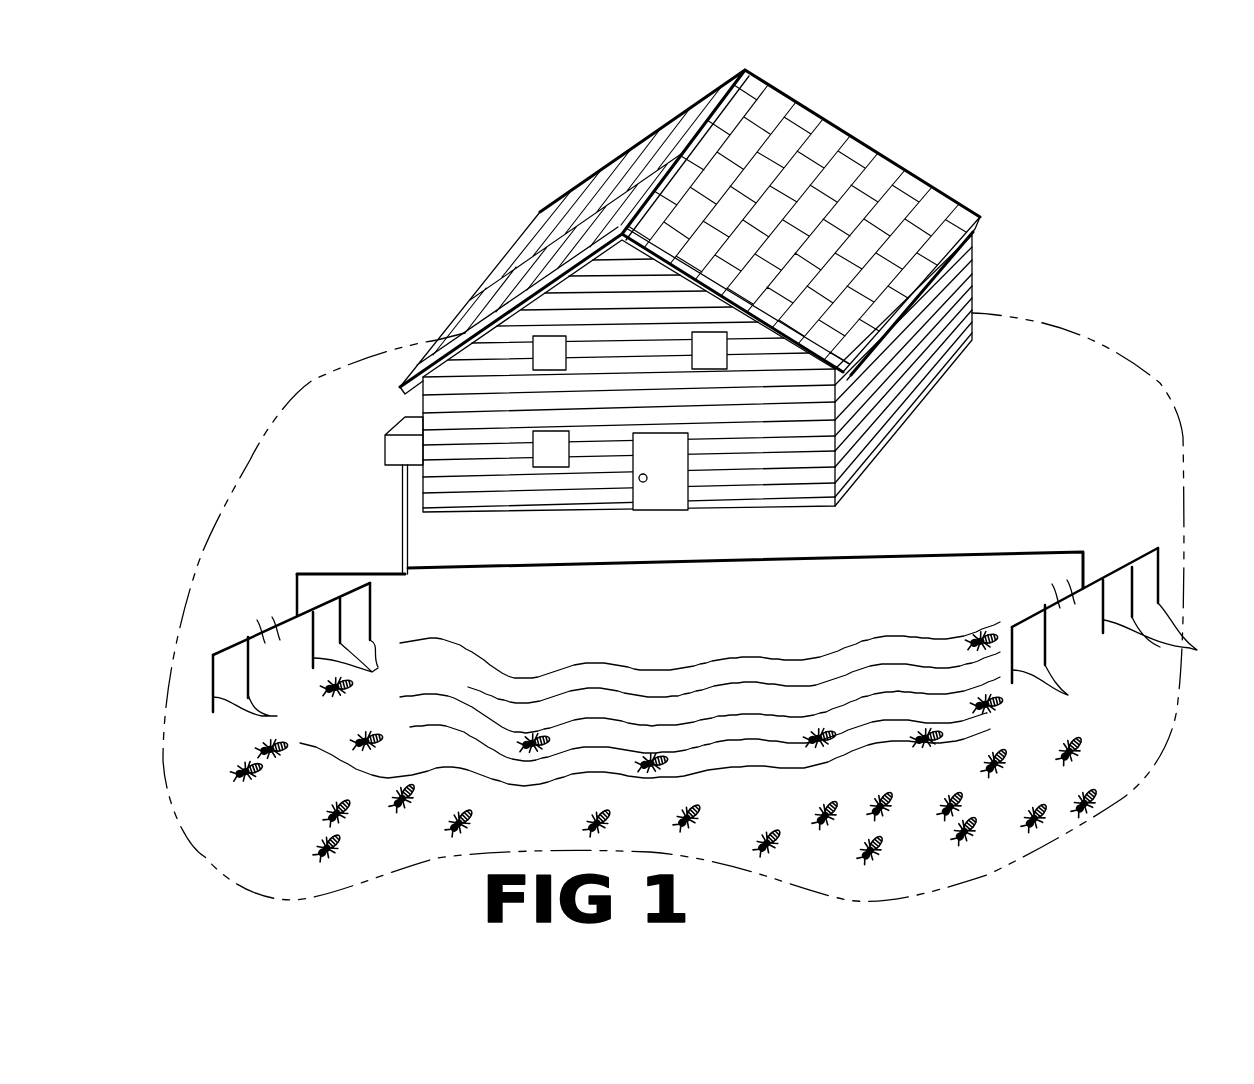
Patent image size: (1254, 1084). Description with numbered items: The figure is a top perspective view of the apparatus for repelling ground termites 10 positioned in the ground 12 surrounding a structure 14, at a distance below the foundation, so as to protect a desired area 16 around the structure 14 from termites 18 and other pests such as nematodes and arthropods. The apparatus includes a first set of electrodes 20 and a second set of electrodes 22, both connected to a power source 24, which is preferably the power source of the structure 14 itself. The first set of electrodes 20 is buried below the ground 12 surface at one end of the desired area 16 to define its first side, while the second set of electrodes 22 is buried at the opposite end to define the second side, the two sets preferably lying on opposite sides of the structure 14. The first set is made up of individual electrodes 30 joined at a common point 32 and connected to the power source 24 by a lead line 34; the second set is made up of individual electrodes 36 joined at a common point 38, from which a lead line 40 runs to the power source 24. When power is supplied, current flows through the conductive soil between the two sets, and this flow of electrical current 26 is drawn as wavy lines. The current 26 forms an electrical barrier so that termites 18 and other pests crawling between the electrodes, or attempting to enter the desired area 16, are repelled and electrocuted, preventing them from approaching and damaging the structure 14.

The apparatus for repelling ground termites 10 is at (305, 345).
The ground 12 is at (1088, 387).
The structure 14 is at (910, 182).
The desired area 16 is at (878, 585).
The termites 18 is at (1087, 802).
The first set of electrodes 20 is at (316, 601).
The second set of electrodes 22 is at (1128, 570).
The power source 24 is at (383, 447).
The flow of electrical current 26 is at (597, 660).
The electrode 30 is at (316, 661).
The common point 32 is at (295, 612).
The lead line 34 is at (370, 567).
The electrode 36 is at (1128, 631).
The common point 38 is at (1087, 577).
The lead line 40 is at (1000, 552).